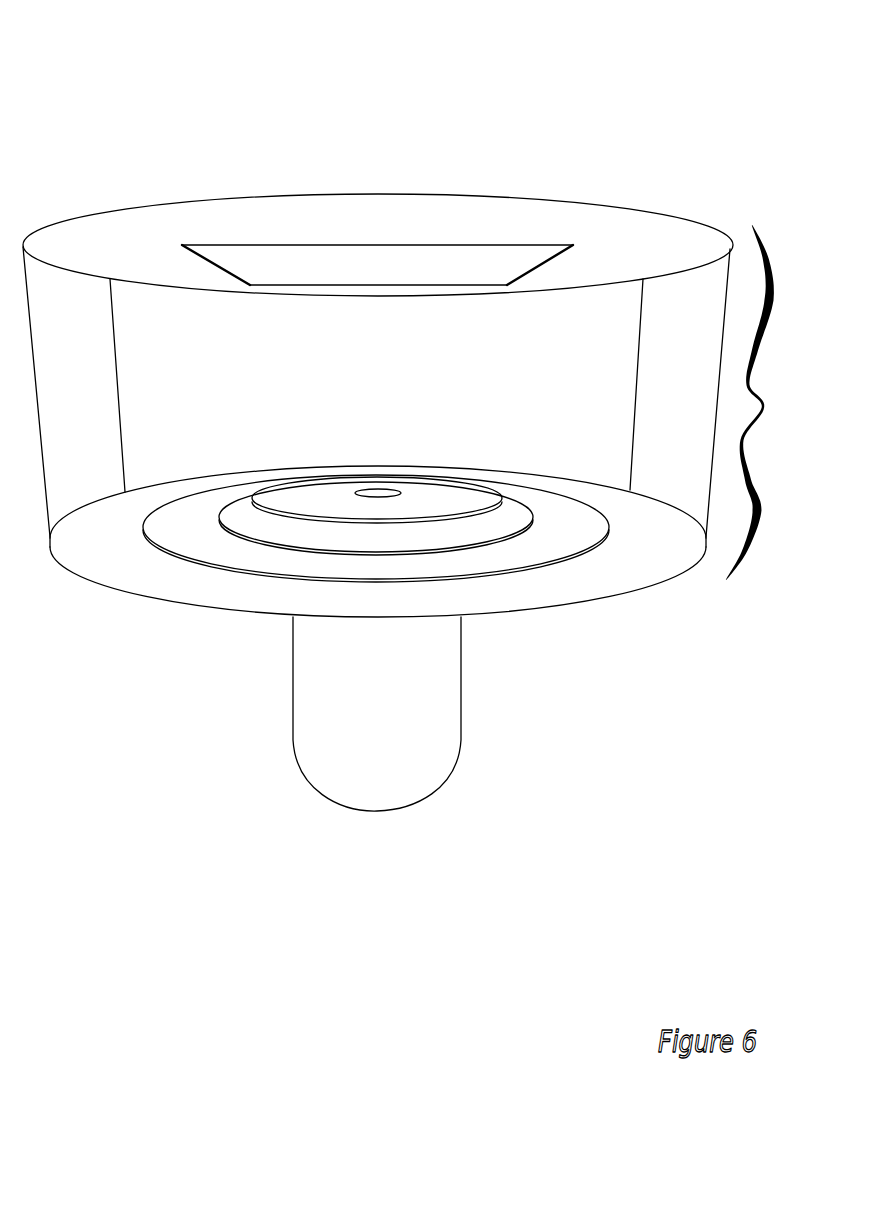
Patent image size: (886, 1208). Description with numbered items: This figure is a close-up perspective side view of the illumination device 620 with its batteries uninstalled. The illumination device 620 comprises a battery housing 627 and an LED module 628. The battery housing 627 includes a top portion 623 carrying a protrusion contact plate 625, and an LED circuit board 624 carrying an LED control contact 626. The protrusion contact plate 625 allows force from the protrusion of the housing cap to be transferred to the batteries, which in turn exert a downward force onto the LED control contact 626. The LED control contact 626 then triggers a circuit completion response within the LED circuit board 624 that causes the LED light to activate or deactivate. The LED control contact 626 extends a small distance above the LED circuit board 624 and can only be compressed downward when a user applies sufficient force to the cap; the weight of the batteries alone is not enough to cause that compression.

The illumination device 620 is at (120, 76).
The top portion 623 is at (515, 199).
The LED circuit board 624 is at (145, 590).
The protrusion contact plate 625 is at (304, 263).
The LED control contact 626 is at (319, 485).
The battery housing 627 is at (764, 402).
The LED module 628 is at (402, 797).